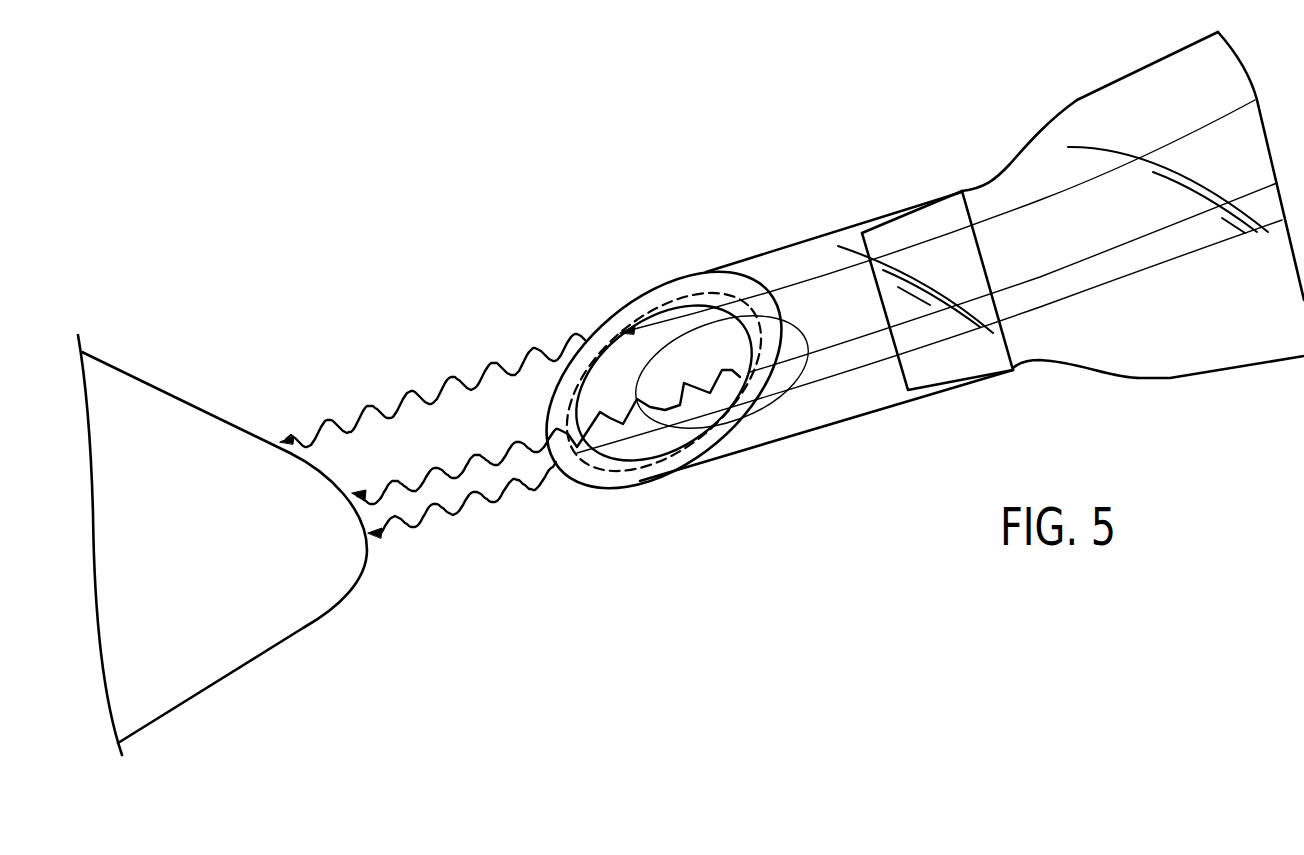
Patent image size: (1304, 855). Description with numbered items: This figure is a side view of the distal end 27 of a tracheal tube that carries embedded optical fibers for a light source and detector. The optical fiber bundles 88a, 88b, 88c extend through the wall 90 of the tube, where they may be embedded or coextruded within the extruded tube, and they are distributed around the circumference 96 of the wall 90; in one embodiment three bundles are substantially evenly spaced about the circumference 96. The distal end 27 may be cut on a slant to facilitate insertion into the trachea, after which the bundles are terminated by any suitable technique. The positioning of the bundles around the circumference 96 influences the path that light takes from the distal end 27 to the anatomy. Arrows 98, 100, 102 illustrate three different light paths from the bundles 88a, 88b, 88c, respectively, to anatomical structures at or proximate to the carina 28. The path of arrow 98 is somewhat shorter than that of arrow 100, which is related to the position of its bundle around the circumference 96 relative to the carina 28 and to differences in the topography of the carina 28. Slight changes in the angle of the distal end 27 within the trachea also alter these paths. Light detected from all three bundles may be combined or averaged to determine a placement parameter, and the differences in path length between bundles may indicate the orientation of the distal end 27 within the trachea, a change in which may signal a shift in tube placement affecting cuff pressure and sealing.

The distal end 27 is at (523, 372).
The carina 28 is at (252, 533).
The fiber bundle 88a is at (819, 388).
The fiber bundle 88b is at (851, 343).
The fiber bundle 88c is at (803, 278).
The wall 90 is at (643, 302).
The circumference 96 is at (637, 463).
The arrow 98 is at (417, 530).
The arrow 100 is at (460, 457).
The arrow 102 is at (452, 378).